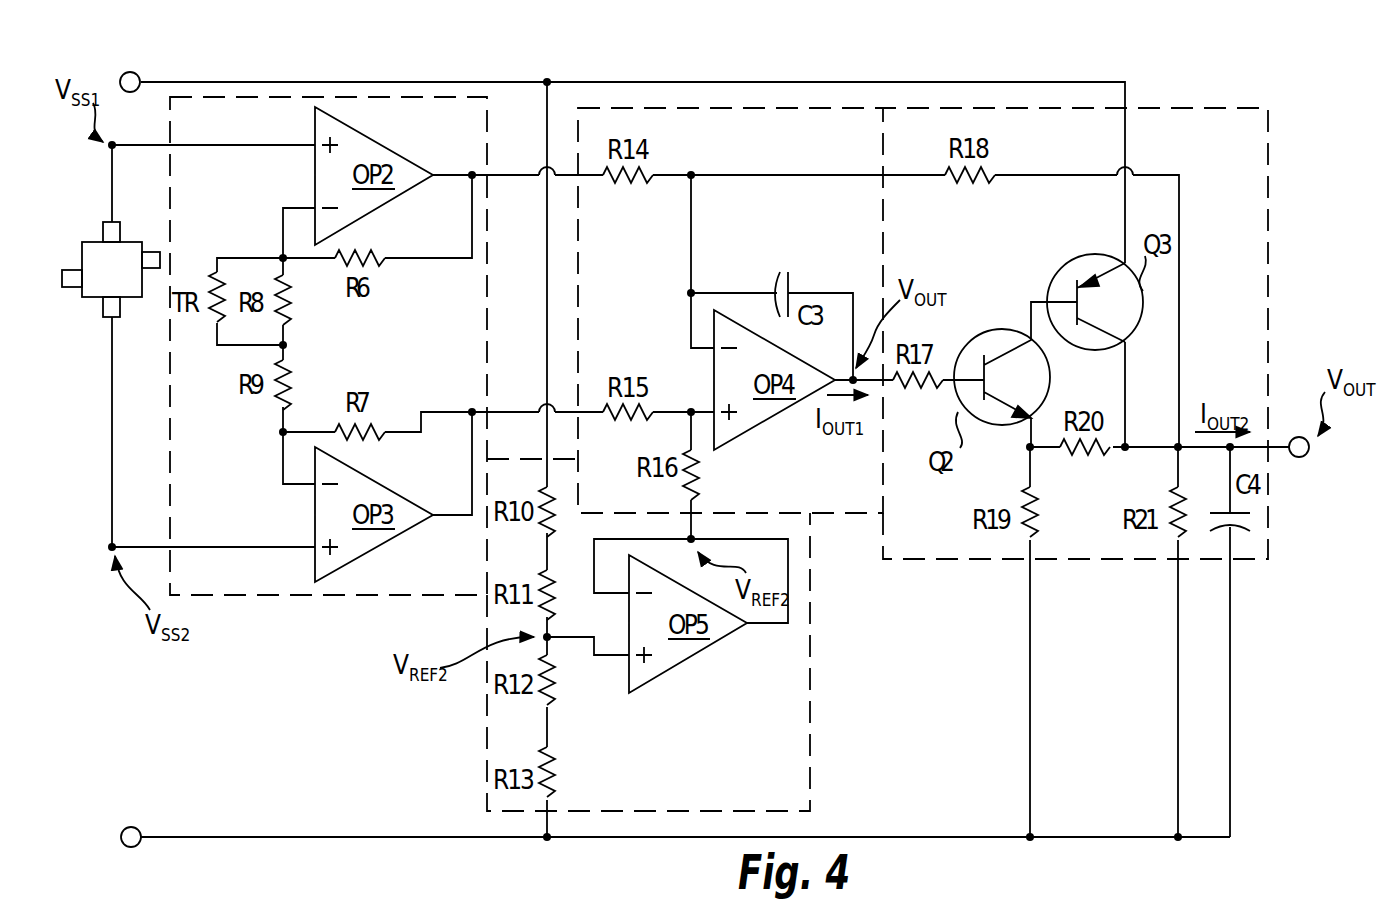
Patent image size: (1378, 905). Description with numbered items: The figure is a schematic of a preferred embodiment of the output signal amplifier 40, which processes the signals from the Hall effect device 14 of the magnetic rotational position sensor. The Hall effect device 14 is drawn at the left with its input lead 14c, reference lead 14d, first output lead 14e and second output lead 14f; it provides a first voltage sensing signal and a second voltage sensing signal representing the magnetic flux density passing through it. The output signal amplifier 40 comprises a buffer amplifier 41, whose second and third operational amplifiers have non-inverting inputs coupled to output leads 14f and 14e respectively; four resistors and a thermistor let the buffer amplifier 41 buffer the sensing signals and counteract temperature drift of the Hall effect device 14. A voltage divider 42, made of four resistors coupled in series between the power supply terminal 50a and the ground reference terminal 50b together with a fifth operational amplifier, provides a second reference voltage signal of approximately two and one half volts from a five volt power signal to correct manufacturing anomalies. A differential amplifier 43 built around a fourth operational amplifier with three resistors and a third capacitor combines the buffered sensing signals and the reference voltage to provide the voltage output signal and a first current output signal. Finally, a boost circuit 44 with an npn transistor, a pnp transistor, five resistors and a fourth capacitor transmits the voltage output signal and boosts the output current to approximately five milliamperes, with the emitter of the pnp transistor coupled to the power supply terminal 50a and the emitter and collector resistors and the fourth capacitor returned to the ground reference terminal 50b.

The Hall effect device 14 is at (134, 300).
The input lead 14c is at (68, 288).
The reference lead 14d is at (150, 250).
The second output lead 14e is at (105, 320).
The first output lead 14f is at (103, 228).
The output signal amplifier 40 is at (1262, 92).
The buffer amplifier 41 is at (333, 597).
The voltage divider 42 is at (812, 757).
The differential amplifier 43 is at (578, 260).
The boost circuit 44 is at (1090, 560).
The power supply terminal 50a is at (146, 72).
The ground reference terminal 50b is at (119, 831).